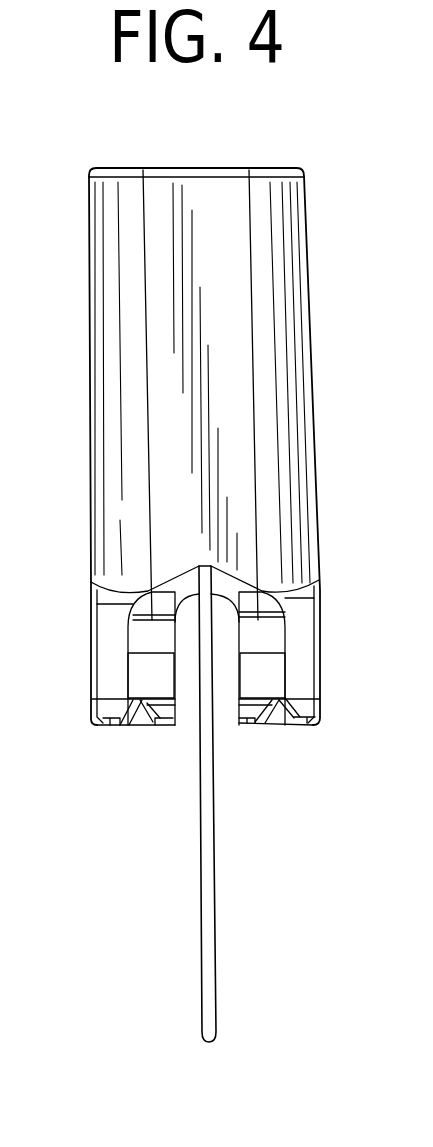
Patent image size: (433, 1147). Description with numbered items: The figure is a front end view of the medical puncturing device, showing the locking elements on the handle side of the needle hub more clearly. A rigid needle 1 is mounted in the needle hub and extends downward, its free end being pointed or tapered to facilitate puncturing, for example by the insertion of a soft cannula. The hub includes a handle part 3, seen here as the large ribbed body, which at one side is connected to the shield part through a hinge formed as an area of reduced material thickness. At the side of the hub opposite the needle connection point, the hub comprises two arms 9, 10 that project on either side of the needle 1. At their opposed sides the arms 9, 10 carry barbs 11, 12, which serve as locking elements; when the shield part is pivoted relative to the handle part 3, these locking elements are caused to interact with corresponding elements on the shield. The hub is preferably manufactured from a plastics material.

The needle 1 is at (210, 920).
The handle part 3 is at (212, 408).
The arm 9 is at (117, 642).
The arm 10 is at (295, 643).
The barb 11 is at (125, 697).
The barb 12 is at (285, 697).